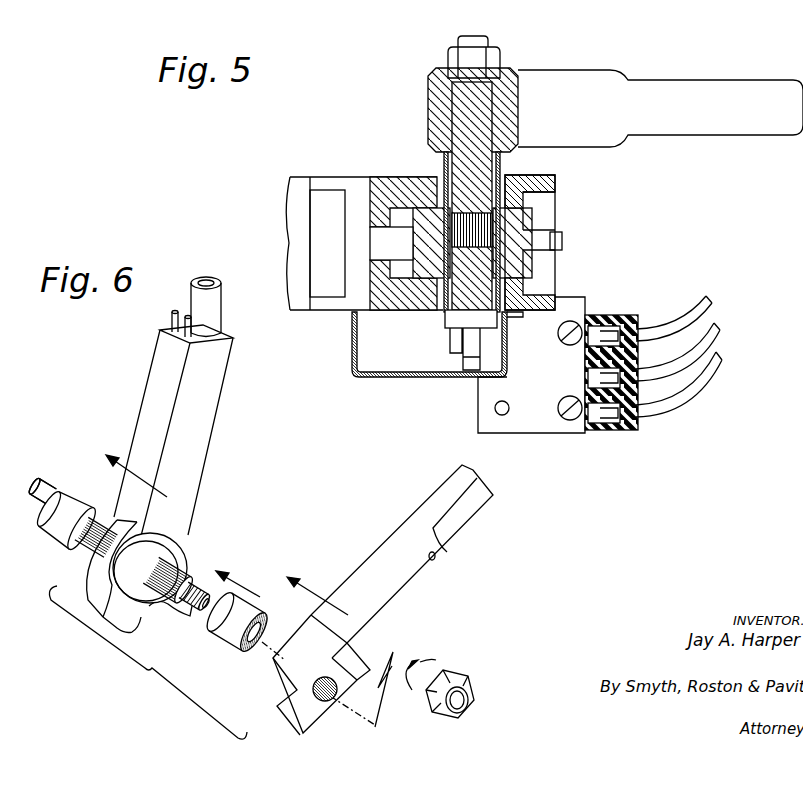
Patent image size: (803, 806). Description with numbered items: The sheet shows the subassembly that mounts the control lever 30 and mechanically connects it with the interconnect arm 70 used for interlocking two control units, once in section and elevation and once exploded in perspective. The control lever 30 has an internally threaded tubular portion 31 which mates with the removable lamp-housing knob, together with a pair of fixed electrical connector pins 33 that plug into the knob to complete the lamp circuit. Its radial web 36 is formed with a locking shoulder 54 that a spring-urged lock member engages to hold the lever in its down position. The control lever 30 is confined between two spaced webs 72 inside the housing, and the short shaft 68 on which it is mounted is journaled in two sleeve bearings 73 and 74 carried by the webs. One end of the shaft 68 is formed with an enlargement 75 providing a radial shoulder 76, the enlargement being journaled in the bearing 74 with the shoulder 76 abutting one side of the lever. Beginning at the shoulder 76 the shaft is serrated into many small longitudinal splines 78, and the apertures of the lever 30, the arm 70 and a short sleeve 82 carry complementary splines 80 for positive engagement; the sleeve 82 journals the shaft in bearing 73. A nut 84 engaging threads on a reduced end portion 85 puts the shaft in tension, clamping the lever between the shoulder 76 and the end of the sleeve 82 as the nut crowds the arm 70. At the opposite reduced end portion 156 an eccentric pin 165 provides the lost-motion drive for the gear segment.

In FIG. 5, the control lever 30 is at (532, 214).
In FIG. 6, the control lever 30 is at (210, 420).
In FIG. 6, the internally threaded tubular portion 31 is at (197, 296).
In FIG. 6, the electrical connector pins 33 is at (190, 319).
In FIG. 5, the radial web 36 is at (562, 241).
In FIG. 6, the radial web 36 is at (138, 626).
In FIG. 6, the locking shoulder 54 is at (193, 568).
In FIG. 5, the shaft 68 is at (478, 110).
In FIG. 6, the shaft 68 is at (79, 490).
In FIG. 5, the interconnect arm 70 is at (658, 97).
In FIG. 6, the interconnect arm 70 is at (400, 550).
In FIG. 5, the webs 72 is at (395, 176).
In FIG. 5, the sleeve bearing 73 is at (547, 187).
In FIG. 5, the sleeve bearing 74 is at (510, 321).
In FIG. 6, the enlargement 75 is at (63, 521).
In FIG. 5, the radial shoulder 76 is at (503, 308).
In FIG. 6, the radial shoulder 76 is at (80, 528).
In FIG. 5, the longitudinal splines 78 is at (465, 232).
In FIG. 6, the longitudinal splines 78 is at (176, 566).
In FIG. 5, the complementary splines 80 is at (500, 135).
In FIG. 6, the complementary splines 80 is at (253, 651).
In FIG. 5, the short sleeve 82 is at (445, 157).
In FIG. 6, the short sleeve 82 is at (225, 628).
In FIG. 5, the nut 84 is at (496, 66).
In FIG. 6, the nut 84 is at (451, 675).
In FIG. 5, the reduced end portion 85 is at (477, 36).
In FIG. 6, the reduced end portion 85 is at (193, 613).
In FIG. 6, the reduced end portion 156 is at (38, 468).
In FIG. 6, the eccentric pin 165 is at (50, 485).